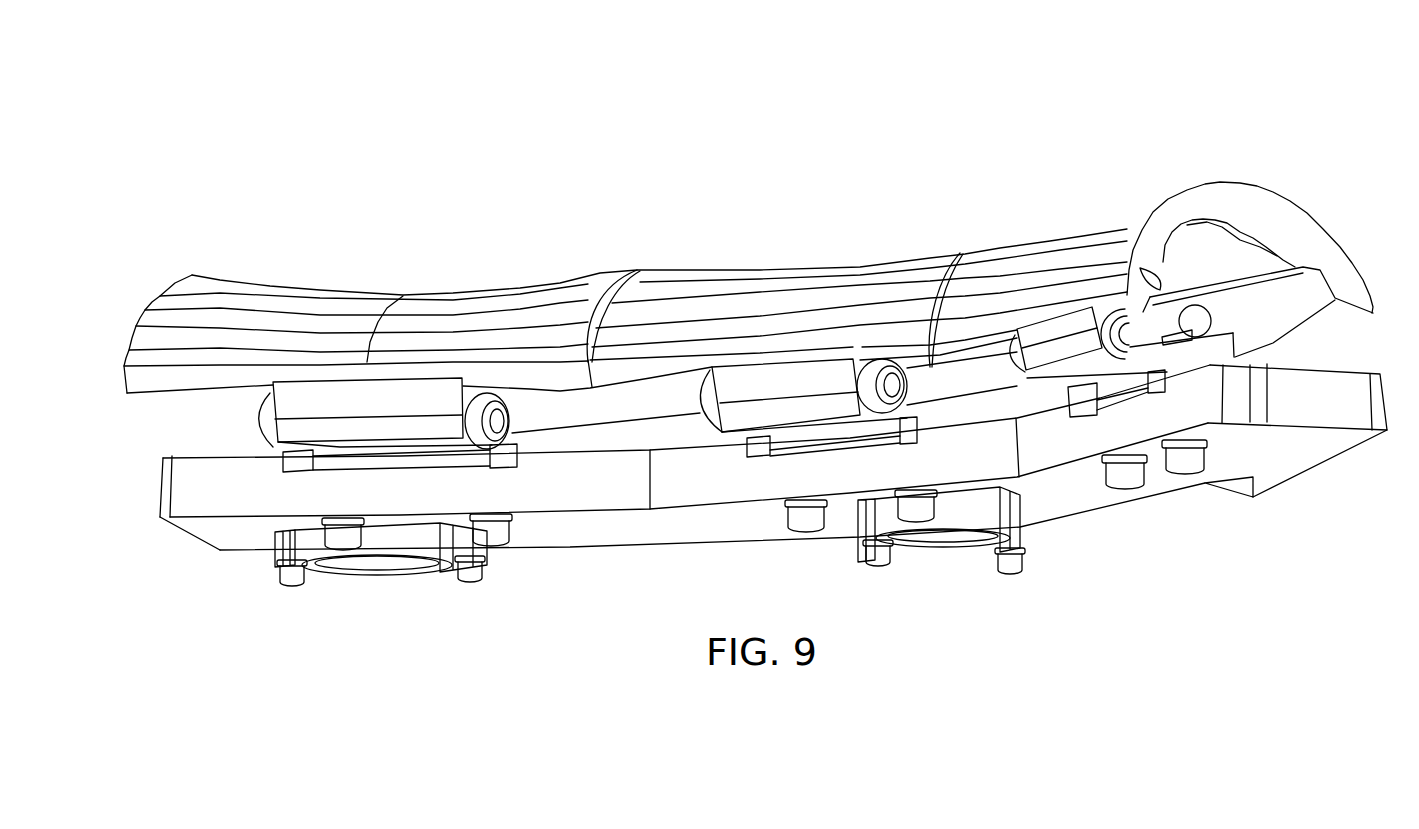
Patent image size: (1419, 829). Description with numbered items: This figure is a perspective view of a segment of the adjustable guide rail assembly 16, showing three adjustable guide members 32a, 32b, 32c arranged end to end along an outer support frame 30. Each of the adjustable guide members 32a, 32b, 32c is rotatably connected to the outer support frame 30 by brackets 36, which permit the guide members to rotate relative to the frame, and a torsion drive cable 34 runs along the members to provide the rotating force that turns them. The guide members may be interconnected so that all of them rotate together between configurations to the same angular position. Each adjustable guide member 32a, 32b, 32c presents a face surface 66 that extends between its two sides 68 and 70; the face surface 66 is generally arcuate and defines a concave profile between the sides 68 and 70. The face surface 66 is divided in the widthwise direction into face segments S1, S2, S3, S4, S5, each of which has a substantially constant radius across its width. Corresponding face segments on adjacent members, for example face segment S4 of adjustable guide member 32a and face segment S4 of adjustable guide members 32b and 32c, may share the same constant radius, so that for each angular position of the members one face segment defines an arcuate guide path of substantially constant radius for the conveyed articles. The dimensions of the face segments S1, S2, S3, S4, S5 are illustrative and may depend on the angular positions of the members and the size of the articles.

The guide rail assembly 16 is at (940, 120).
The outer support frame 30 is at (1295, 448).
The adjustable guide member 32a is at (1136, 200).
The adjustable guide member 32b is at (845, 236).
The adjustable guide member 32c is at (398, 270).
The torsion drive cable 34 is at (1200, 306).
The bracket 36 is at (1228, 334).
The face surface 66 is at (594, 278).
The side 68 is at (1260, 197).
The side 70 is at (192, 278).
The face segment S1 is at (148, 383).
The face segment S2 is at (307, 357).
The face segment S3 is at (350, 342).
The face segment S4 is at (480, 318).
The face segment S5 is at (527, 298).